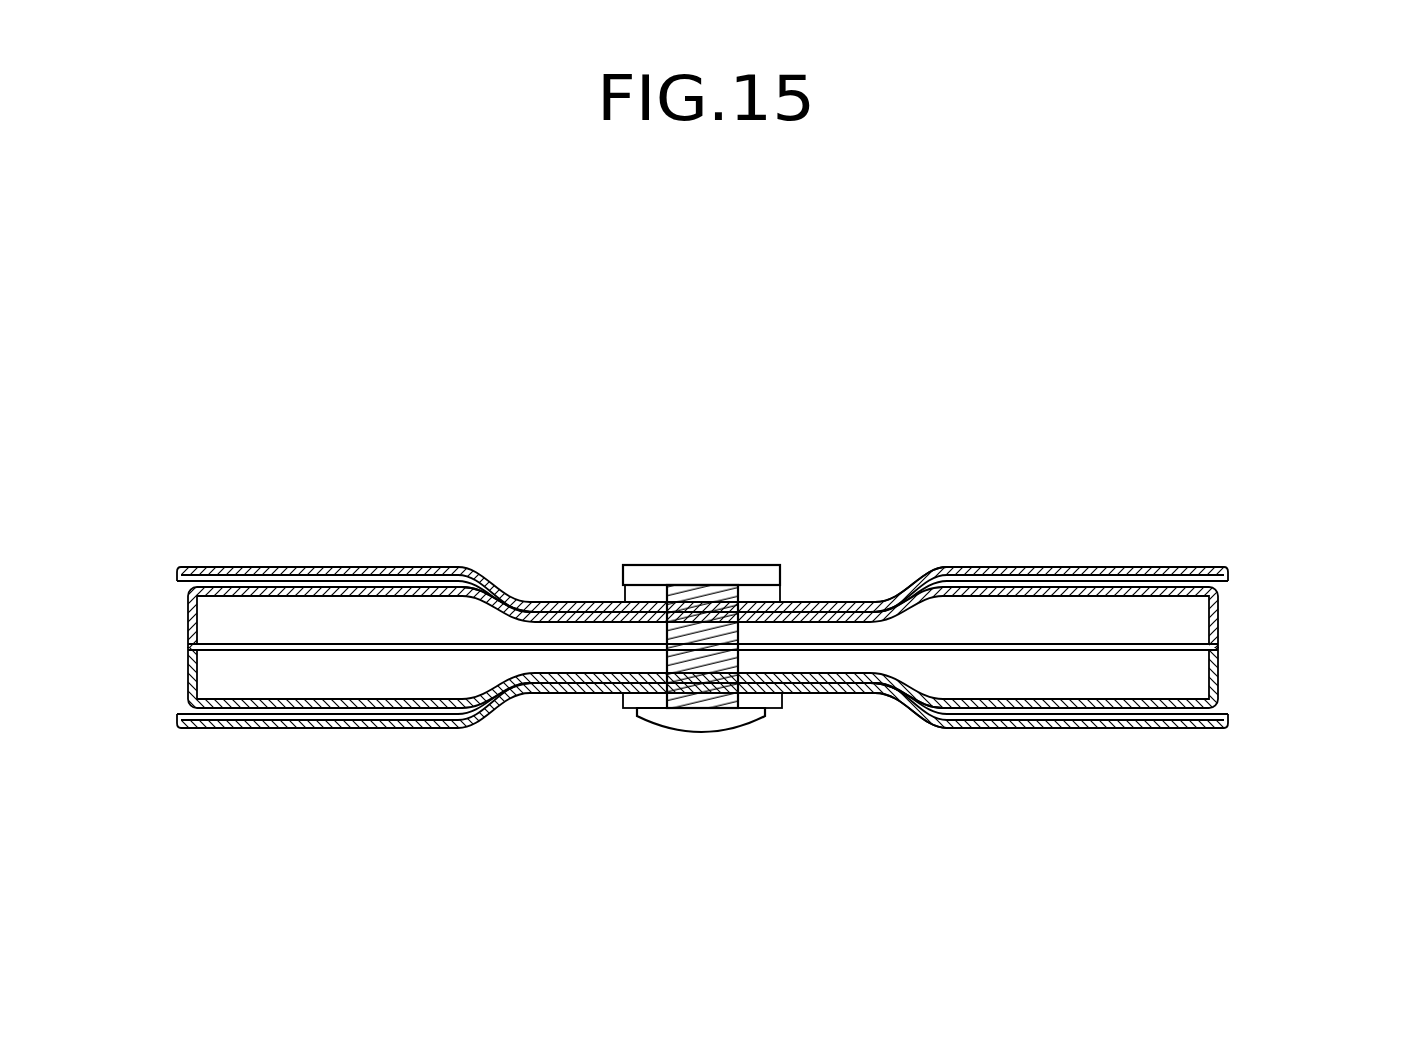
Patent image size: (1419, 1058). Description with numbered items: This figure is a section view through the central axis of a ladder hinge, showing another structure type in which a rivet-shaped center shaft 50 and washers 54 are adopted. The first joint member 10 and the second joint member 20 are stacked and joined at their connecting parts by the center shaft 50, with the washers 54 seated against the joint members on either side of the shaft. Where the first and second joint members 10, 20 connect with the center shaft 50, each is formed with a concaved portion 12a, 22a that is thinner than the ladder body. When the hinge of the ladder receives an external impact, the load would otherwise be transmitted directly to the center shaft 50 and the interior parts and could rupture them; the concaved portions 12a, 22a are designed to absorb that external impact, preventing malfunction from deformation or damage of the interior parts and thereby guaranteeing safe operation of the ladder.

The first joint member 10 is at (262, 535).
The concaved portion 12a is at (916, 583).
The second joint member 20 is at (1262, 641).
The concaved portion 22a is at (478, 600).
The center shaft 50 is at (658, 572).
The washer 54 is at (785, 592).